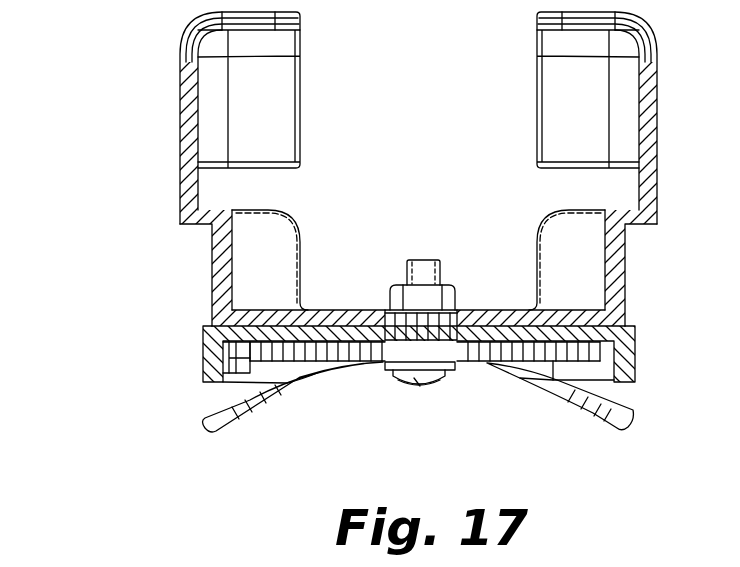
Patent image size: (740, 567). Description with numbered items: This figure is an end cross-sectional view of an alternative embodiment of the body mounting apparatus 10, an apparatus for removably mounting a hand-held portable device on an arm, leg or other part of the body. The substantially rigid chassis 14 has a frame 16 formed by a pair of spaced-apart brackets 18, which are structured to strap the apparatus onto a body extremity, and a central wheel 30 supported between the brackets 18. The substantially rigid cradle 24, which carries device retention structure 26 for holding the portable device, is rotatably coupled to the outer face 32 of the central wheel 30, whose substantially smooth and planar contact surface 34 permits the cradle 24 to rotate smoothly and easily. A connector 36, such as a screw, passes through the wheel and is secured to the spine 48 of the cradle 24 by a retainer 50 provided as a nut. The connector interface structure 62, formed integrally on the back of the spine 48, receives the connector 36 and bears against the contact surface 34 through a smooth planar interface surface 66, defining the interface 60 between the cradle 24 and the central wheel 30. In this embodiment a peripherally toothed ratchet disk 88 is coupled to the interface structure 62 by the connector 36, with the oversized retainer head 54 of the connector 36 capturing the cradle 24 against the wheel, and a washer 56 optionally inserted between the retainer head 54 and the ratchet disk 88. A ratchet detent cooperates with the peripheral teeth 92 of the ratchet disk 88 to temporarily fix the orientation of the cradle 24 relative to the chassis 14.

The body mounting apparatus 10 is at (98, 66).
The chassis 14 is at (634, 326).
The frame 16 is at (636, 370).
The brackets 18 is at (637, 400).
The cradle 24 is at (630, 287).
The device retention structure 26 is at (660, 128).
The central wheel 30 is at (482, 333).
The face 32 is at (473, 308).
The contact surface 34 is at (579, 322).
The connector 36 is at (446, 382).
The spine 48 is at (357, 310).
The retainer 50 is at (400, 288).
The retainer head 54 is at (423, 388).
The washer 56 is at (457, 370).
The interface 60 is at (197, 326).
The connector interface structure 62 is at (221, 266).
The interface surface 66 is at (212, 343).
The ratchet disk 88 is at (300, 354).
The peripheral teeth 92 is at (247, 354).